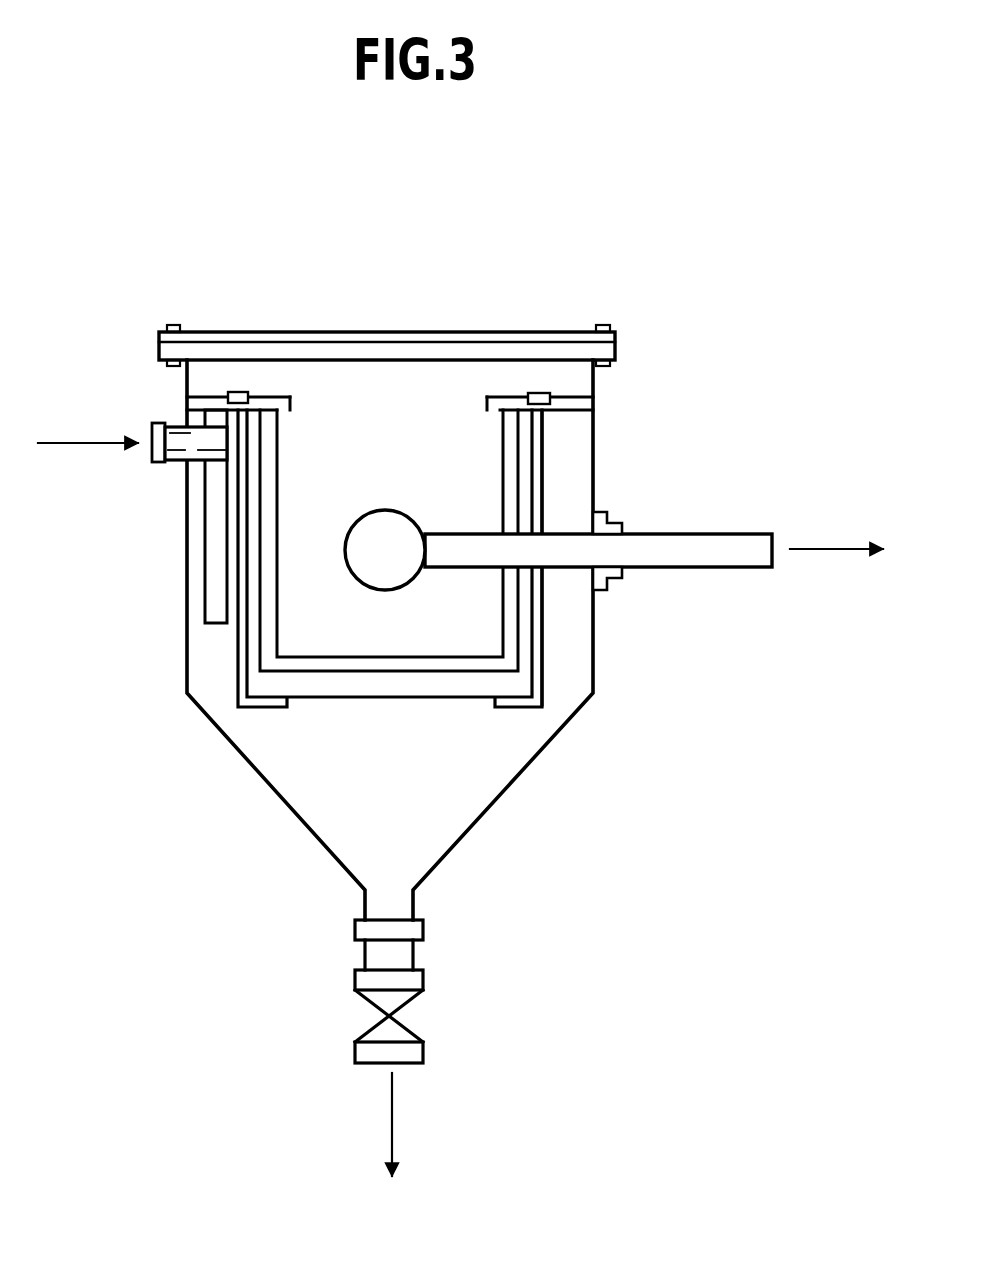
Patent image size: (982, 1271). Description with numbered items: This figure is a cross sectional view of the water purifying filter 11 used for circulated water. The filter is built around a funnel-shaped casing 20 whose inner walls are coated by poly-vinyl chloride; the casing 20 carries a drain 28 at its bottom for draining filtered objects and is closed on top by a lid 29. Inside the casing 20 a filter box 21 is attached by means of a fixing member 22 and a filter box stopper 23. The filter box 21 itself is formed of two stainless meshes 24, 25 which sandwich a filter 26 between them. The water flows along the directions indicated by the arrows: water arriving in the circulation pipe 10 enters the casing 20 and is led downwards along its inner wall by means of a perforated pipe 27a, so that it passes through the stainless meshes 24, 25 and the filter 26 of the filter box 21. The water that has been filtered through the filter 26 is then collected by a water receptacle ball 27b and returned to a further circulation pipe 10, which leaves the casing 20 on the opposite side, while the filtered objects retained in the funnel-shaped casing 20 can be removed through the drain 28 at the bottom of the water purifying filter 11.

The circulation pipe 10 is at (158, 463).
The water purifying filter 11 is at (460, 721).
The casing 20 is at (597, 471).
The filter box 21 is at (390, 395).
The fixing member 22 is at (545, 649).
The filter box stopper 23 is at (572, 393).
The stainless mesh 24 is at (375, 698).
The stainless mesh 25 is at (413, 655).
The filter 26 is at (453, 673).
The perforated pipe 27a is at (207, 609).
The water receptacle ball 27b is at (368, 514).
The drain 28 is at (413, 905).
The lid 29 is at (476, 332).